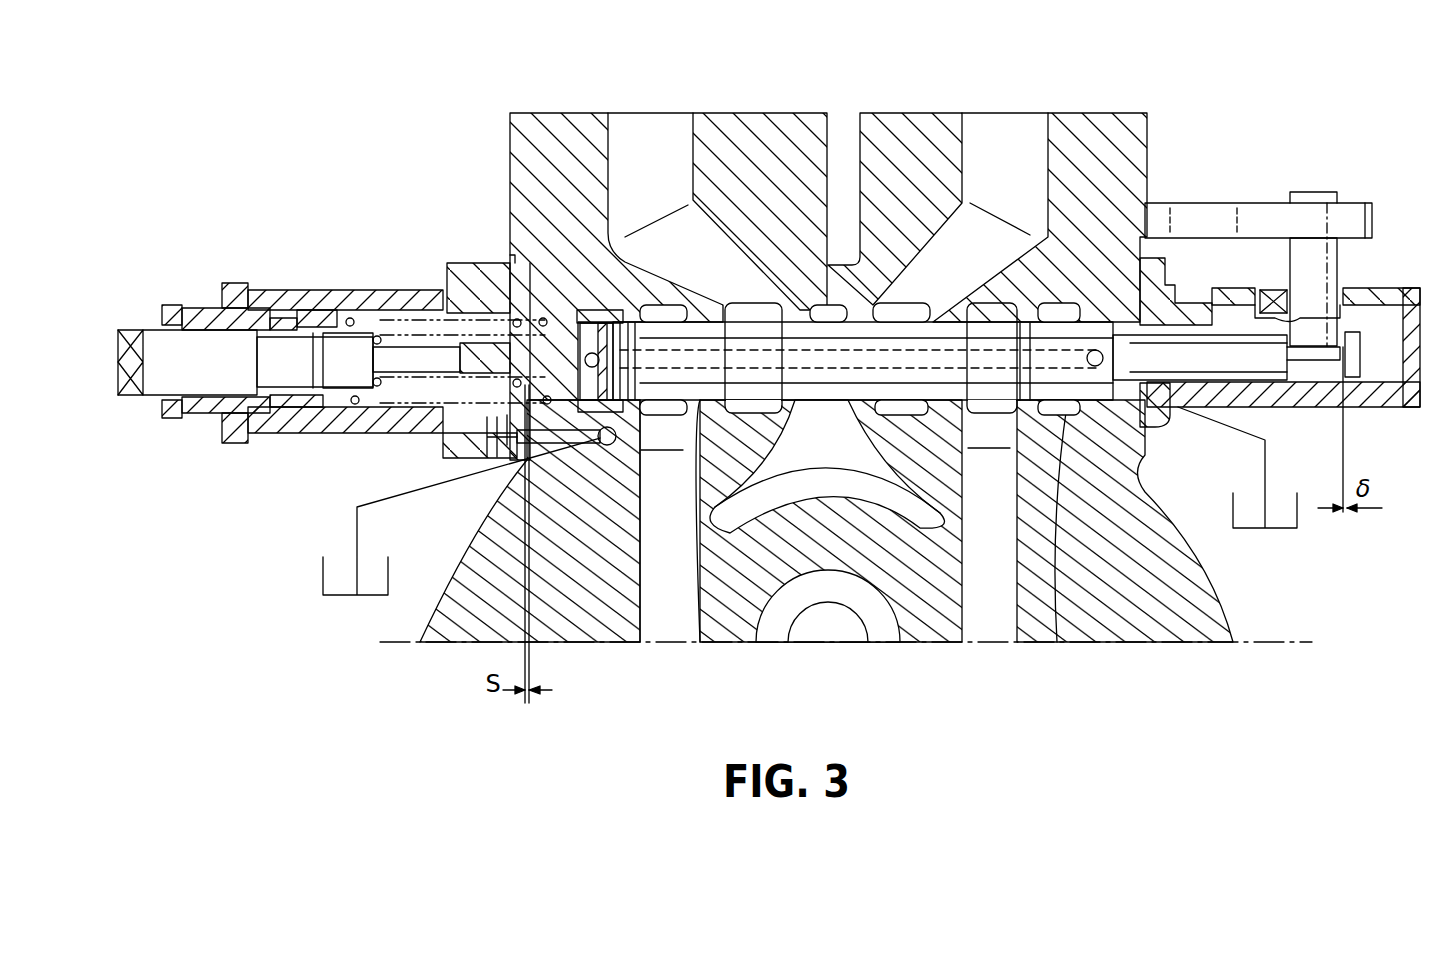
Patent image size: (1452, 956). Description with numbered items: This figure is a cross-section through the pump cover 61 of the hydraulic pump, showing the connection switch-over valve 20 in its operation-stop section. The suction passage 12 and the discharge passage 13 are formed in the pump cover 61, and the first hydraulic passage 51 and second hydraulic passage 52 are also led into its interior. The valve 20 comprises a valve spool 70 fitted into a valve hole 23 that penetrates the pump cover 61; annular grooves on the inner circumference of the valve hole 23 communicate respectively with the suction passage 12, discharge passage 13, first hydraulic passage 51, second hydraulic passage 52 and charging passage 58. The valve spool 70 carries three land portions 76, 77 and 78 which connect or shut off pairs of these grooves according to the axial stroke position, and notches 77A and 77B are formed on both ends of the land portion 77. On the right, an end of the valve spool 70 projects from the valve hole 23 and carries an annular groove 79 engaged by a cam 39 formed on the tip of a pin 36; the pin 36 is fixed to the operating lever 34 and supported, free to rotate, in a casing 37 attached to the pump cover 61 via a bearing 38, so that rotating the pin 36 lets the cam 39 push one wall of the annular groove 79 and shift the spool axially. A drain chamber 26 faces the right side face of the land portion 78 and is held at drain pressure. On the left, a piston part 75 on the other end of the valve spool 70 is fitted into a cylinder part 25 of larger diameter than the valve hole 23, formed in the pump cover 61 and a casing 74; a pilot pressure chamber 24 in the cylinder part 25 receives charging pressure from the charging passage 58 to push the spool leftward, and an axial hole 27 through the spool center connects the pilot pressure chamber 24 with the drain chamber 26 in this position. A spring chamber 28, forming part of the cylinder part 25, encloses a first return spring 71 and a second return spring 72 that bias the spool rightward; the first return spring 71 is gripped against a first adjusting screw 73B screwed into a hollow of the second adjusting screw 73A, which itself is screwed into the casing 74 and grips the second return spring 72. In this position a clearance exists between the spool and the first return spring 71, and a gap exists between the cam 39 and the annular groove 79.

The suction passage 12 is at (665, 633).
The discharge passage 13 is at (920, 517).
The connection switch-over valve 20 is at (458, 247).
The valve hole 23 is at (1093, 317).
The pilot pressure chamber 24 is at (607, 323).
The cylinder part 25 is at (583, 310).
The drain chamber 26 is at (1133, 420).
The axial hole 27 is at (573, 320).
The spring chamber 28 is at (377, 420).
The operating lever 34 is at (1213, 200).
The pin 36 is at (1340, 248).
The casing 37 is at (1393, 397).
The bearing 38 is at (1273, 290).
The cam 39 is at (1350, 293).
The first hydraulic passage 51 is at (1007, 133).
The second hydraulic passage 52 is at (653, 133).
The charging passage 58 is at (1057, 600).
The pump cover 61 is at (567, 310).
The valve spool 70 is at (478, 357).
The first return spring 71 is at (378, 340).
The second return spring 72 is at (347, 320).
The second adjusting screw 73A is at (197, 313).
The first adjusting screw 73B is at (150, 328).
The casing 74 is at (273, 302).
The piston part 75 is at (520, 187).
The land portion 76 is at (668, 330).
The land portion 77 is at (833, 323).
The notch 77A is at (797, 323).
The notch 77B is at (872, 303).
The land portion 78 is at (995, 330).
The annular groove 79 is at (1288, 372).